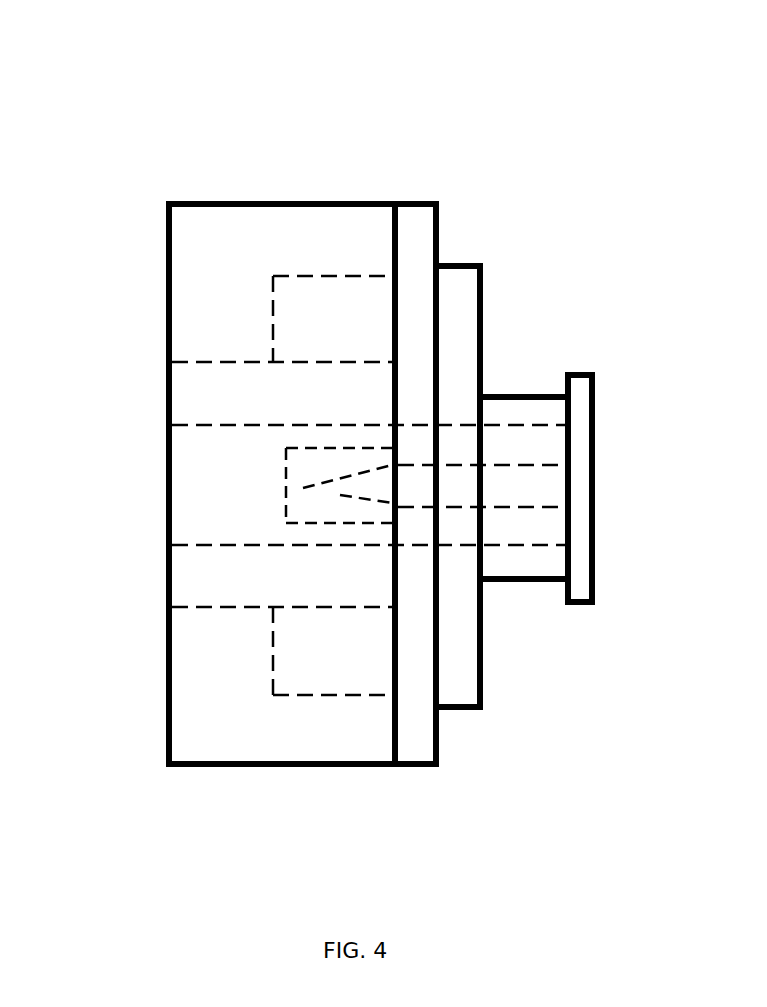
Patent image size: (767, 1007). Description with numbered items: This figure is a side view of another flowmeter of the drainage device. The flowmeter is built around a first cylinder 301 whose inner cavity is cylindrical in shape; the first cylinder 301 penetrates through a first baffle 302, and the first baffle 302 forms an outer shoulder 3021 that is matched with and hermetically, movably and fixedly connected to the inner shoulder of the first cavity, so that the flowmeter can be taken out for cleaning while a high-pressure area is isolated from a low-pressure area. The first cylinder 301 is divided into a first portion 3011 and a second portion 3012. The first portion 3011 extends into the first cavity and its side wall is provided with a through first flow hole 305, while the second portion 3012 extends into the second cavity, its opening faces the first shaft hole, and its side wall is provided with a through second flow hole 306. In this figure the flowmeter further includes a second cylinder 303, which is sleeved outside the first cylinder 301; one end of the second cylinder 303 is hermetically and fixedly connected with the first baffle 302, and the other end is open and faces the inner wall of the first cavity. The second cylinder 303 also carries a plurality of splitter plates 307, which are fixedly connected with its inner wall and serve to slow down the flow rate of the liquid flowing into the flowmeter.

The second cylinder 303 is at (255, 203).
The splitter plates 307 is at (288, 303).
The outer shoulder 3021 is at (423, 230).
The first baffle 302 is at (518, 282).
The first cylinder 301 is at (225, 423).
The second flow hole 306 is at (530, 463).
The first flow hole 305 is at (355, 485).
The first portion 3011 is at (233, 605).
The second portion 3012 is at (535, 582).